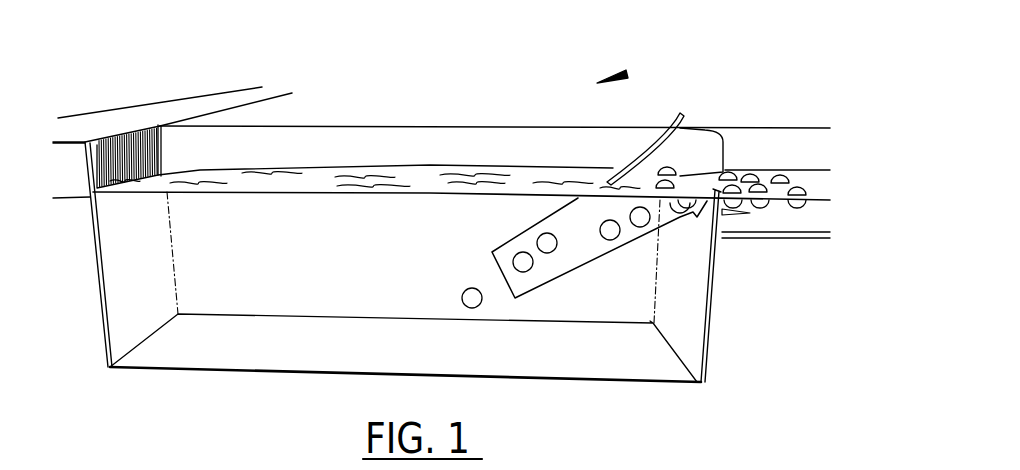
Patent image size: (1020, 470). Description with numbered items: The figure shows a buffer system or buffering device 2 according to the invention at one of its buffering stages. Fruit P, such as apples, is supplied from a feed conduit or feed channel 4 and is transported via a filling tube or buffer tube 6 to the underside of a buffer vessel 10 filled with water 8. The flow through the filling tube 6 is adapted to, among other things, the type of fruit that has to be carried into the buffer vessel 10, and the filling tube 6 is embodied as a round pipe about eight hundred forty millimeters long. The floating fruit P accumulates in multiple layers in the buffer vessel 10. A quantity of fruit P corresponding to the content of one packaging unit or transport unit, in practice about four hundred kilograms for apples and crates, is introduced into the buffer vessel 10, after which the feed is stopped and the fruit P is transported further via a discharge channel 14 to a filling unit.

The buffering device 2 is at (626, 73).
The feed channel 4 is at (785, 222).
The filling tube 6 is at (582, 245).
The water 8 is at (142, 237).
The buffer vessel 10 is at (230, 352).
The discharge channel 14 is at (121, 122).
The fruit P is at (462, 298).